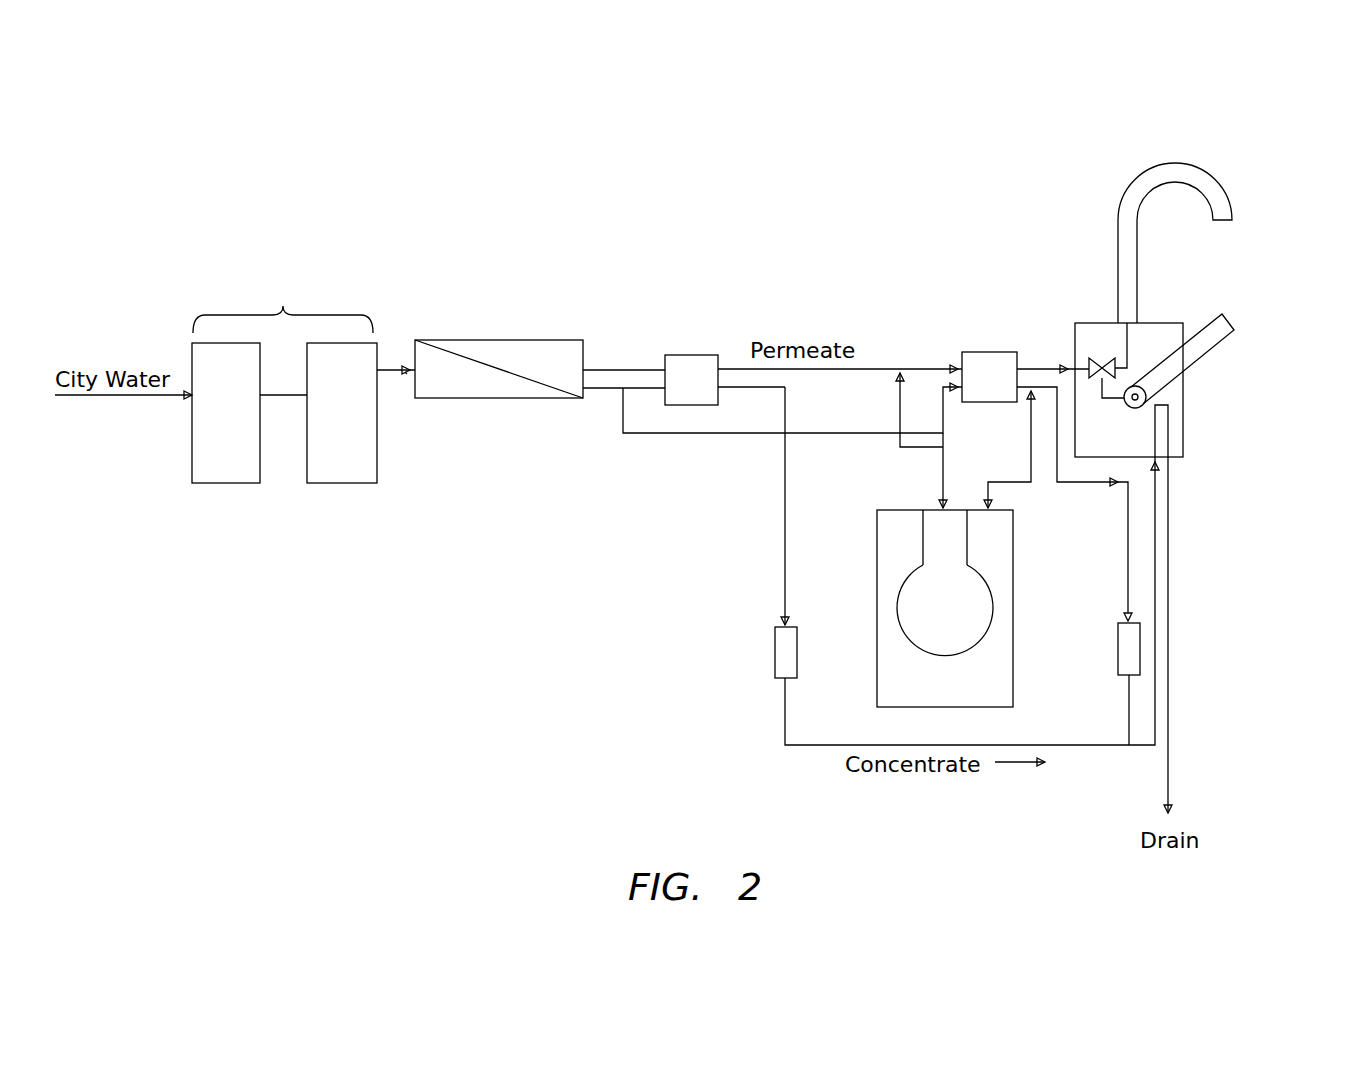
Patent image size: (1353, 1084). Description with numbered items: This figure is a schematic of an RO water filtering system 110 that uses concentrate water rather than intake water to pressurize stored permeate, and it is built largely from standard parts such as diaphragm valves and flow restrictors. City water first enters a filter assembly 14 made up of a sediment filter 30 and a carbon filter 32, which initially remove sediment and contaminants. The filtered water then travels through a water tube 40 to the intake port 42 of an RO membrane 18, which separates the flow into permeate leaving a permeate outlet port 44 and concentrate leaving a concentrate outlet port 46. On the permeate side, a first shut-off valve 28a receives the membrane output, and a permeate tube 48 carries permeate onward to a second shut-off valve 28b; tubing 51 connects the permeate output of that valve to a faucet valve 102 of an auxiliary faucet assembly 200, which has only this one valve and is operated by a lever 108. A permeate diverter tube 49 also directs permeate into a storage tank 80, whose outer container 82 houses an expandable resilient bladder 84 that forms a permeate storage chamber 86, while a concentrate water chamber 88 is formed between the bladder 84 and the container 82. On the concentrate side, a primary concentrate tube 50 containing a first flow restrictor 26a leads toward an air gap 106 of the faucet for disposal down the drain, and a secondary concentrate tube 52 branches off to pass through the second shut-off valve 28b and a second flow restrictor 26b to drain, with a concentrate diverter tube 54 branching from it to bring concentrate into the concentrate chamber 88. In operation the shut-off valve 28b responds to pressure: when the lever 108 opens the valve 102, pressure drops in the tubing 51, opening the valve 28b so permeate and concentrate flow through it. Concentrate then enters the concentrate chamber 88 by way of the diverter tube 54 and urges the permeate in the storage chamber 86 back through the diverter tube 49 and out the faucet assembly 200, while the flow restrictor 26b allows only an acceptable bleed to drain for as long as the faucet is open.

The RO water filtering system 110 is at (395, 188).
The filter assembly 14 is at (283, 302).
The sediment filter 30 is at (192, 448).
The carbon filter 32 is at (377, 465).
The water tube 40 is at (394, 367).
The intake port 42 is at (405, 380).
The RO membrane 18 is at (495, 333).
The permeate outlet port 44 is at (597, 365).
The concentrate outlet port 46 is at (597, 400).
The first shut-off valve 28a is at (688, 355).
The secondary concentrate tube 52 is at (710, 440).
The permeate tube 48 is at (887, 363).
The permeate diverter tube 49 is at (945, 462).
The second shut-off valve 28b is at (972, 352).
The tubing 51 is at (1040, 365).
The concentrate diverter tube 54 is at (1020, 485).
The primary concentrate tube 50 is at (787, 490).
The first flow restrictor 26a is at (775, 652).
The second flow restrictor 26b is at (1118, 655).
The storage tank 80 is at (958, 608).
The outer container 82 is at (1013, 622).
The expandable resilient bladder 84 is at (965, 548).
The permeate storage chamber 86 is at (962, 612).
The concentrate water chamber 88 is at (929, 695).
The air gap 106 is at (1223, 423).
The faucet valve 102 is at (1095, 357).
The auxiliary faucet assembly 200 is at (1103, 218).
The lever 108 is at (1222, 348).